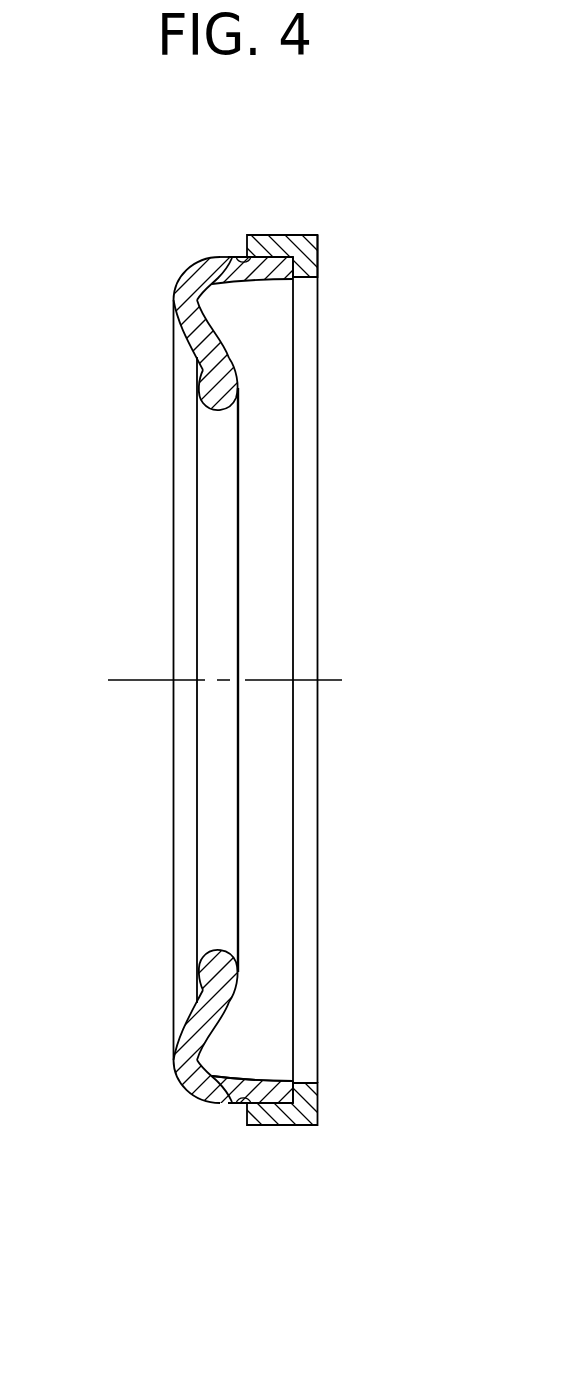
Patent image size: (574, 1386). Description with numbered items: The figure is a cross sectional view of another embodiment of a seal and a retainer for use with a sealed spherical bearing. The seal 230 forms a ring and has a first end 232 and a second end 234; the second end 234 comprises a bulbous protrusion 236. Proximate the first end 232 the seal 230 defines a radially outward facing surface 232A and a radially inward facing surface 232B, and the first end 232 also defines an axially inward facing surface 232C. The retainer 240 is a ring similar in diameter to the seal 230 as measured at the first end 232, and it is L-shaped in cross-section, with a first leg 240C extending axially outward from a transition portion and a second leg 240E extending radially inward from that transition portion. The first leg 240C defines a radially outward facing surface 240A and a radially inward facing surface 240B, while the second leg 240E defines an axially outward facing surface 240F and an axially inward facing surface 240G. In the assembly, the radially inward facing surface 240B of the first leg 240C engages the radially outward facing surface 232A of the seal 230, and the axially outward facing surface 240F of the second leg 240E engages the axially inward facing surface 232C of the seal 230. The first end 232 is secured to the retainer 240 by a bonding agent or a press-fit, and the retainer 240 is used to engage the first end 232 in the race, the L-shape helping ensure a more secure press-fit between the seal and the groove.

The seal 230 is at (193, 265).
The first end 232 is at (285, 281).
The radially outward facing surface 232A is at (240, 1103).
The radially inward facing surface 232B is at (257, 1085).
The axially inward facing surface 232C is at (317, 1087).
The second end 234 is at (207, 420).
The bulbous protrusion 236 is at (213, 387).
The retainer 240 is at (319, 236).
The radially outward facing surface 240A is at (228, 257).
The radially inward facing surface 240B is at (263, 234).
The first leg 240C is at (287, 235).
The second leg 240E is at (318, 250).
The axially outward facing surface 240F is at (293, 292).
The axially inward facing surface 240G is at (320, 272).